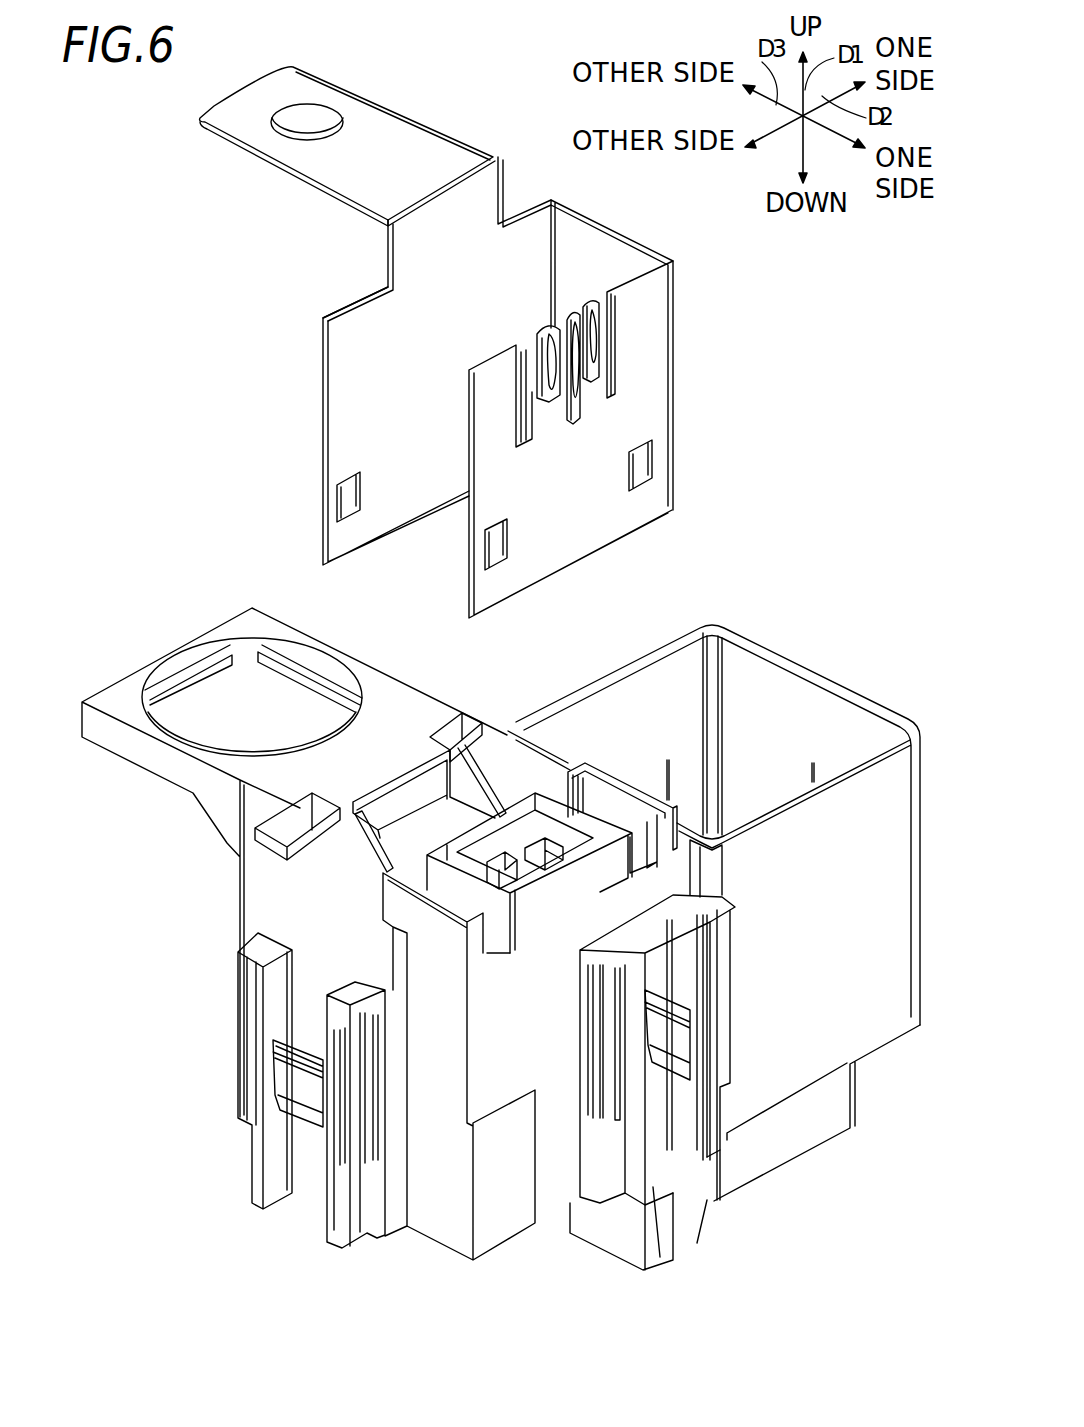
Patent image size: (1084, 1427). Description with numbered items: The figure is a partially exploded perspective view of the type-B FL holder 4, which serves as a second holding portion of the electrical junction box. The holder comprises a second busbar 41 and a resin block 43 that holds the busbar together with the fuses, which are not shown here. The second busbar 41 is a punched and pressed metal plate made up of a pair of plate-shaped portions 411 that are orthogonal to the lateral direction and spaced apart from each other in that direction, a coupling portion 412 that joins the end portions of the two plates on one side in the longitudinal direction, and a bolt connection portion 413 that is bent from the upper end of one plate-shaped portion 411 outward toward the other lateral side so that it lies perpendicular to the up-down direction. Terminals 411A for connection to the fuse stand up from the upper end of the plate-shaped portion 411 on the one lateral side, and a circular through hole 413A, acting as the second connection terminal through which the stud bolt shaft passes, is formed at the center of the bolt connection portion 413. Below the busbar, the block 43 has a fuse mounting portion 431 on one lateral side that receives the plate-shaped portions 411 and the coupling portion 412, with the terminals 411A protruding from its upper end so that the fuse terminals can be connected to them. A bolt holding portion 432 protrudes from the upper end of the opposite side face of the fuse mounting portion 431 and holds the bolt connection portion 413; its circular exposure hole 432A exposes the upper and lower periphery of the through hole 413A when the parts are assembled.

The type-B FL holder 4 is at (486, 328).
The second busbar 41 is at (515, 389).
The plate-shaped portion 411 is at (515, 439).
The terminal 411A is at (654, 362).
The coupling portion 412 is at (612, 335).
The bolt connection portion 413 is at (375, 179).
The through hole 413A is at (339, 89).
The block 43 is at (714, 900).
The fuse mounting portion 431 is at (486, 1033).
The bolt holding portion 432 is at (294, 860).
The exposure hole 432A is at (246, 679).